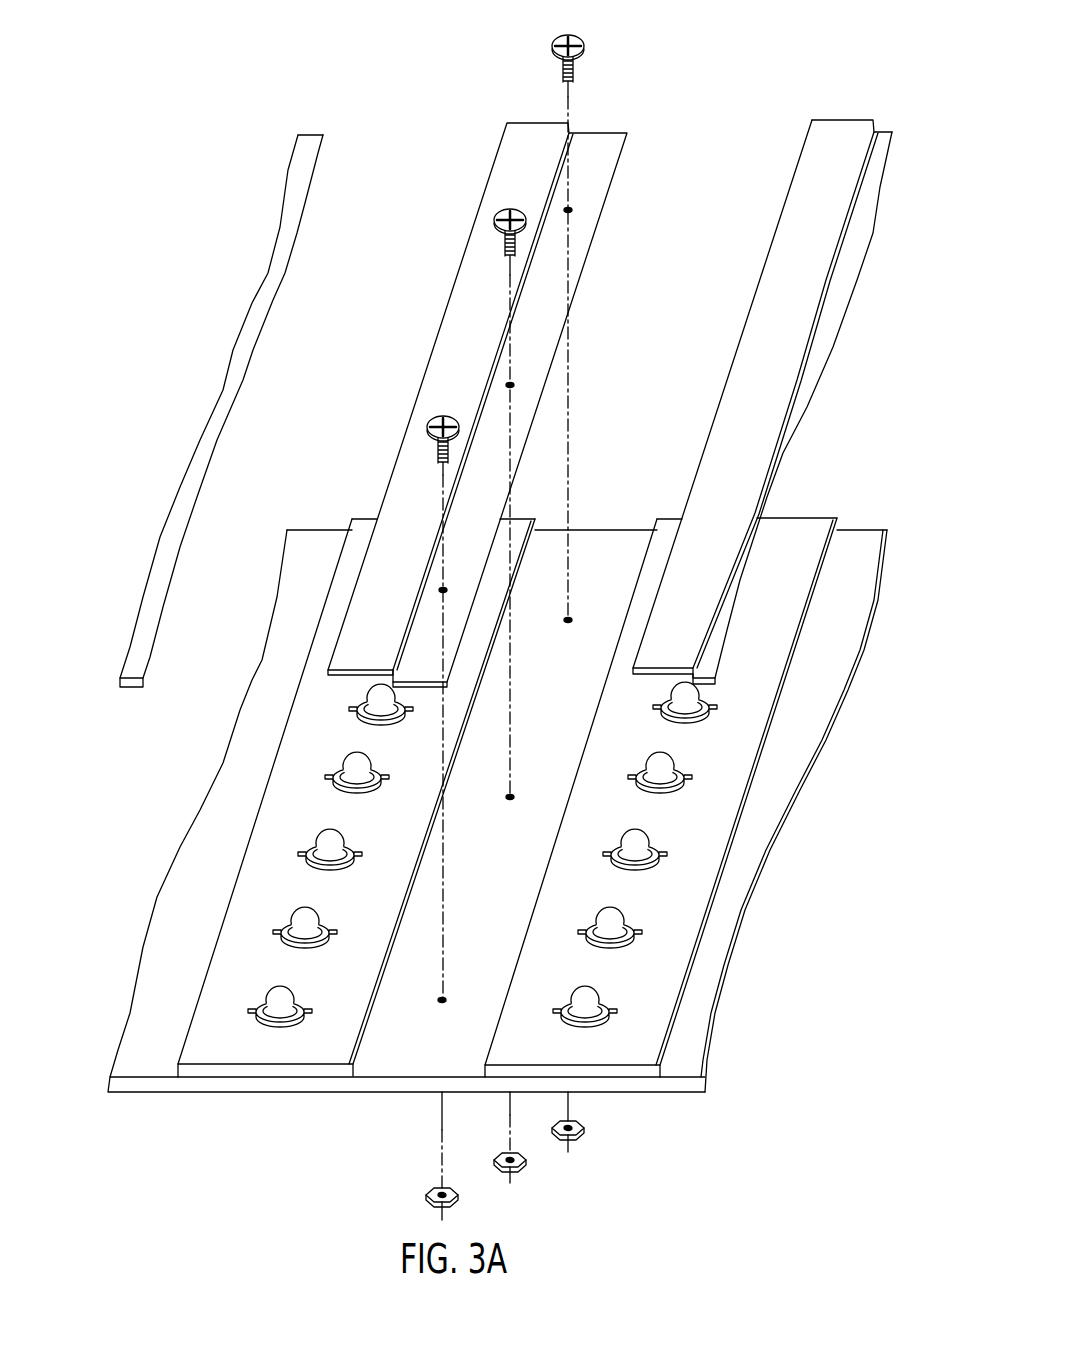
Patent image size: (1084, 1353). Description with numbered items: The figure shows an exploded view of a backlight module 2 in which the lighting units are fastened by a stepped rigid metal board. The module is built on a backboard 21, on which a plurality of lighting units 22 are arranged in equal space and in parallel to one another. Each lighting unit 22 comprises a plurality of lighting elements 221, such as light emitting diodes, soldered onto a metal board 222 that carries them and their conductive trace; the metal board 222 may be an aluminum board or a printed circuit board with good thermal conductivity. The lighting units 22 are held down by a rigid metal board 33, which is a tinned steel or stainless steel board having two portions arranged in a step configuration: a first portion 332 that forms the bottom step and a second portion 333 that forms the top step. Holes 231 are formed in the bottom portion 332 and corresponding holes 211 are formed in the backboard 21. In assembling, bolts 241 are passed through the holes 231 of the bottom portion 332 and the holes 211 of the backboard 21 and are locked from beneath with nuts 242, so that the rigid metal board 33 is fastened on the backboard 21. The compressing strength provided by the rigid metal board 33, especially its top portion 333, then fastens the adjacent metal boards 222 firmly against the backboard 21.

The backlight module 2 is at (144, 798).
The backboard 21 is at (135, 1042).
The lighting unit 22 is at (849, 852).
The hole 211 is at (569, 618).
The lighting element 221 is at (637, 833).
The metal board 222 is at (677, 887).
The hole 231 is at (569, 210).
The bolt 241 is at (551, 41).
The nut 242 is at (582, 1133).
The rigid metal board 33 is at (524, 138).
The first portion 332 is at (583, 132).
The second portion 333 is at (463, 290).